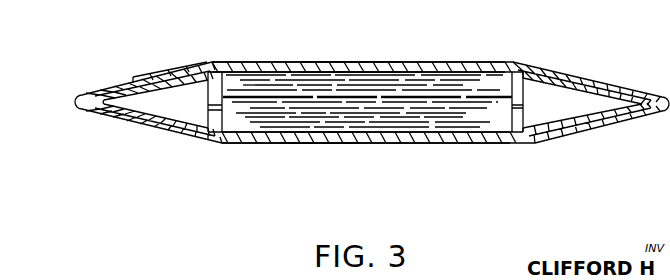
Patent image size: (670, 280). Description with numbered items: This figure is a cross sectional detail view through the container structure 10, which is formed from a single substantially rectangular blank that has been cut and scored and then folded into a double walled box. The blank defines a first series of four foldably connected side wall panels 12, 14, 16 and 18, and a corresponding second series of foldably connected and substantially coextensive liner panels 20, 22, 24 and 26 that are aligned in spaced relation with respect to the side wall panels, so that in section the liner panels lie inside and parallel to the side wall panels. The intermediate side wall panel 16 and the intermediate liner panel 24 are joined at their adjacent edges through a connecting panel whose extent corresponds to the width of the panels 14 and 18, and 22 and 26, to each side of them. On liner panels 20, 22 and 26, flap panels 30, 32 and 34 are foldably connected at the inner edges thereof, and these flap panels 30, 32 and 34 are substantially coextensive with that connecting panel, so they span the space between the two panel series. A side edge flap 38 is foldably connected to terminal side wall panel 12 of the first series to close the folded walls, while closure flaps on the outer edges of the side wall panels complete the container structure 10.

The container structure 10 is at (228, 56).
The side wall panel 12 is at (272, 63).
The side wall panel 14 is at (602, 87).
The intermediate side wall panel 16 is at (422, 143).
The side wall panel 18 is at (112, 120).
The liner panel 20 is at (307, 134).
The liner panel 22 is at (543, 75).
The intermediate liner panel 24 is at (322, 71).
The liner panel 26 is at (112, 90).
The flap panel 30 is at (380, 77).
The flap panel 32 is at (553, 118).
The flap panel 34 is at (155, 113).
The side edge flap 38 is at (180, 73).